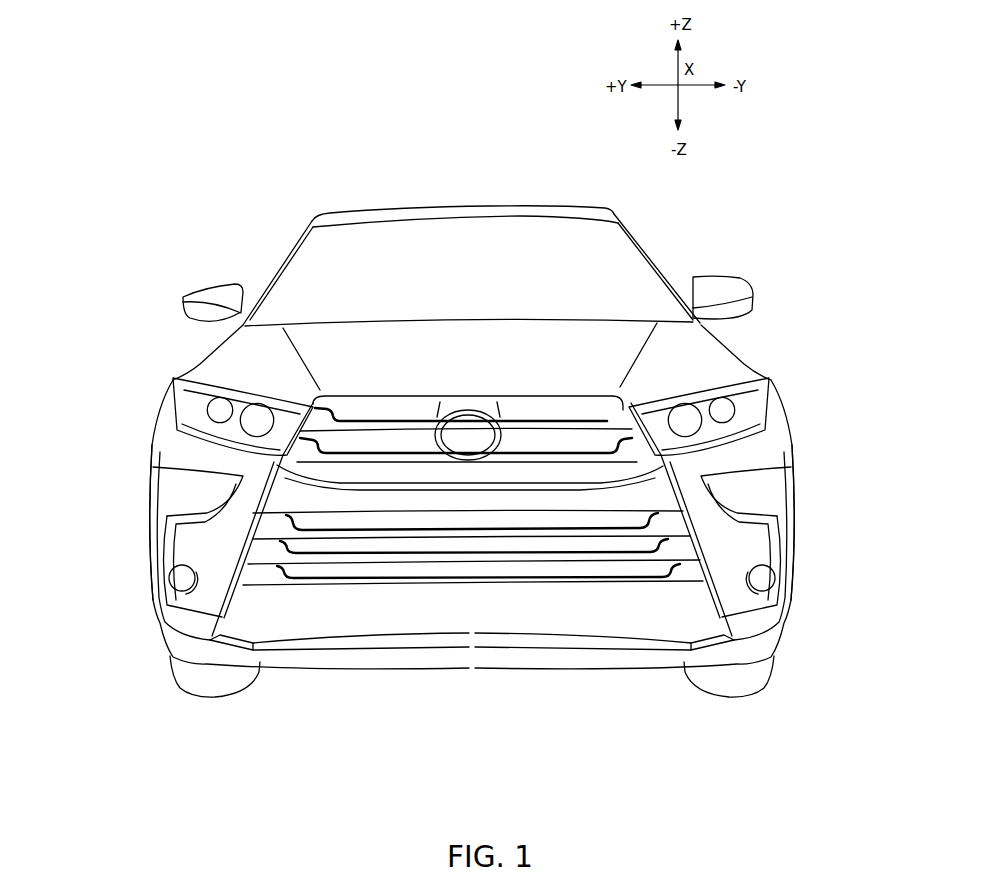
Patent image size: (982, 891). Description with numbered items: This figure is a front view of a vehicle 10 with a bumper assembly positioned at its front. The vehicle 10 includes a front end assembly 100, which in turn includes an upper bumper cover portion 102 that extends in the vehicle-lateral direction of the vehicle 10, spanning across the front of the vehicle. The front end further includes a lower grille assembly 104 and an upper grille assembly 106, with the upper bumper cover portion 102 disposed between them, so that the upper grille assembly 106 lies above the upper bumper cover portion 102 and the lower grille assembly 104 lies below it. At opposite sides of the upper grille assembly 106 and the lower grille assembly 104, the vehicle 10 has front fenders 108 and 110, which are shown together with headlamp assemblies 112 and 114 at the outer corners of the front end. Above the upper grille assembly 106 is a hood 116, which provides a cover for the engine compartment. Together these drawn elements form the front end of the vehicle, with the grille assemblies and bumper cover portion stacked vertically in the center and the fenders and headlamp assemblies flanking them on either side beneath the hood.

The vehicle 10 is at (467, 393).
The front end assembly 100 is at (467, 511).
The upper bumper cover portion 102 is at (348, 500).
The lower grille assembly 104 is at (683, 570).
The upper grille assembly 106 is at (636, 436).
The front fender 108 is at (793, 432).
The front fender 110 is at (146, 447).
The headlamp assembly 112 is at (753, 366).
The headlamp assembly 114 is at (193, 395).
The hood 116 is at (725, 343).